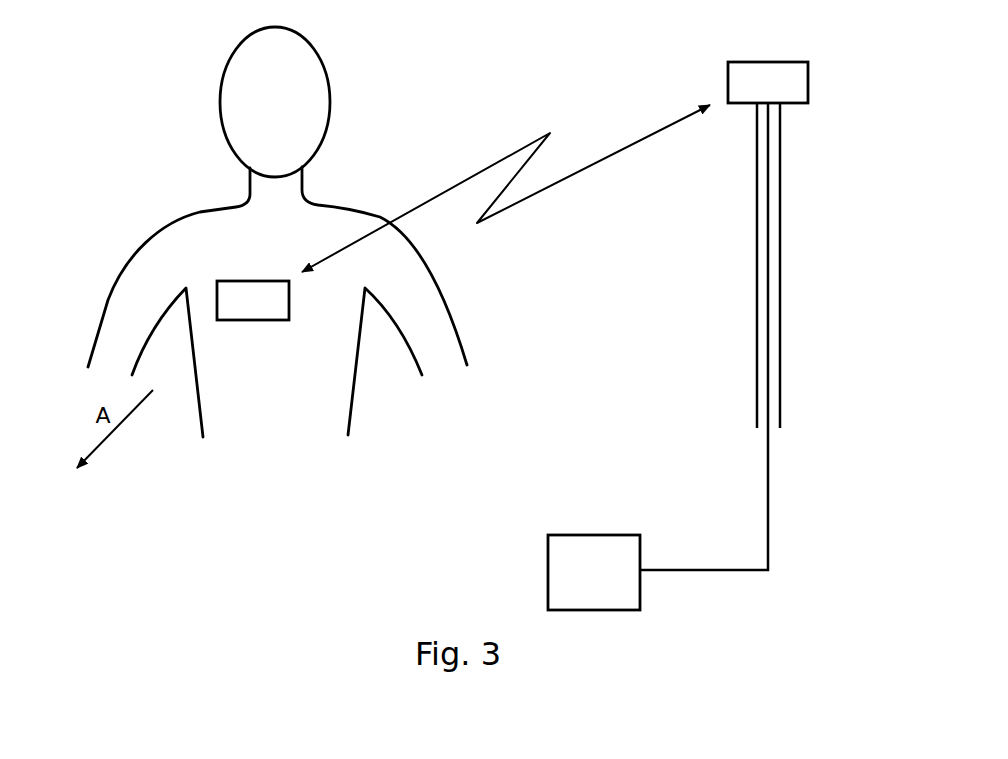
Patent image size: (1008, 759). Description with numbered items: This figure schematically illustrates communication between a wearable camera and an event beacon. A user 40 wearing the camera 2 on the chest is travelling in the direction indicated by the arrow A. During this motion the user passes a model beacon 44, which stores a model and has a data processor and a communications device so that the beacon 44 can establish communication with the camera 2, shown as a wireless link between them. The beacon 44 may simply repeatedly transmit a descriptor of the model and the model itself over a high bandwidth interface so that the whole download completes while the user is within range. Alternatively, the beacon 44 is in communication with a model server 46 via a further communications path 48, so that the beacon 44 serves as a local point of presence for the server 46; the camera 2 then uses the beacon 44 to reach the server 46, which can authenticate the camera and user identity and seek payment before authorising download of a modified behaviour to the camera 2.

The camera 2 is at (253, 322).
The user 40 is at (303, 393).
The model beacon 44 is at (772, 62).
The model server 46 is at (598, 533).
The further communications path 48 is at (770, 537).